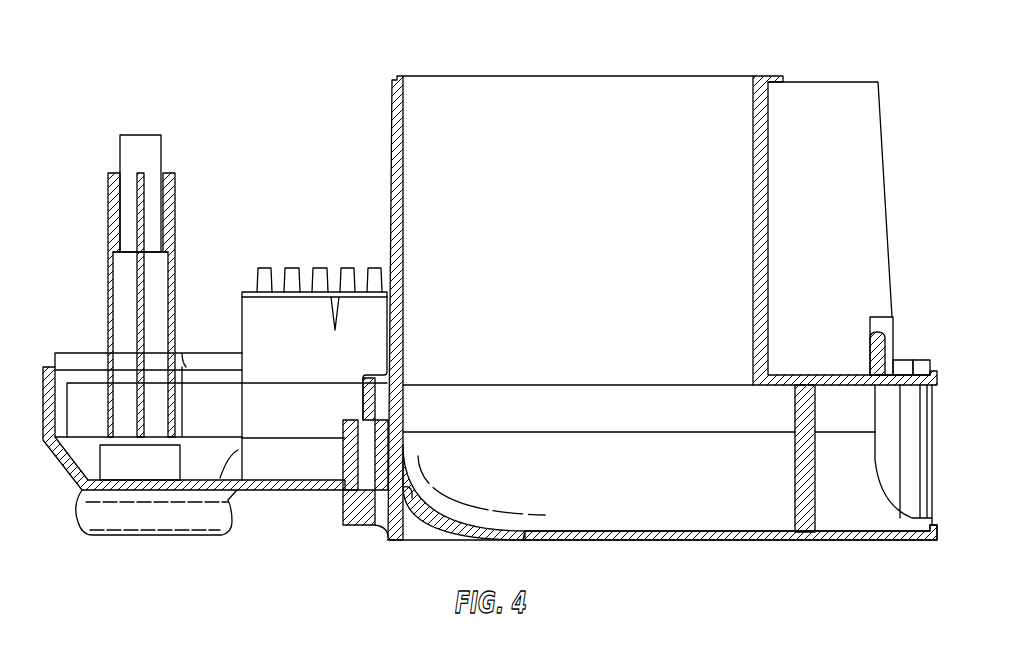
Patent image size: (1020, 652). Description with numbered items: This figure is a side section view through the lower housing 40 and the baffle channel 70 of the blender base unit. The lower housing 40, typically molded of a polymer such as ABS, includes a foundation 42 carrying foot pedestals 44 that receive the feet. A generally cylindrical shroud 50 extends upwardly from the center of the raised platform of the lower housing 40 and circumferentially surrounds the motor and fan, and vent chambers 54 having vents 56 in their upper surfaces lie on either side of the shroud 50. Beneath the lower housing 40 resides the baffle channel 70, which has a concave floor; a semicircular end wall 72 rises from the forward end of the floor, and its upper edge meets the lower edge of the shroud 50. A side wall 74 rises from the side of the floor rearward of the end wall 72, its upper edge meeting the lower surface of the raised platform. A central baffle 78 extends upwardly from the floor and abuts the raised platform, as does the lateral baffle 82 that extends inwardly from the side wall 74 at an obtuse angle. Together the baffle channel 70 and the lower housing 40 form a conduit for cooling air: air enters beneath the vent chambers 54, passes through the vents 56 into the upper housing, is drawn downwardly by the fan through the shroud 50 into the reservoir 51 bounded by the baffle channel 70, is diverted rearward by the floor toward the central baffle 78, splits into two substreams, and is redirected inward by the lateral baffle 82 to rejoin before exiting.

The lower housing 40 is at (898, 242).
The foundation 42 is at (312, 490).
The foot pedestals 44 is at (158, 520).
The shroud 50 is at (760, 80).
The reservoir 51 is at (708, 506).
The vent chambers 54 is at (256, 318).
The vents 56 is at (292, 275).
The baffle channel 70 is at (675, 555).
The end wall 72 is at (397, 430).
The side wall 74 is at (842, 405).
The central baffle 78 is at (812, 493).
The lateral baffle 82 is at (888, 463).